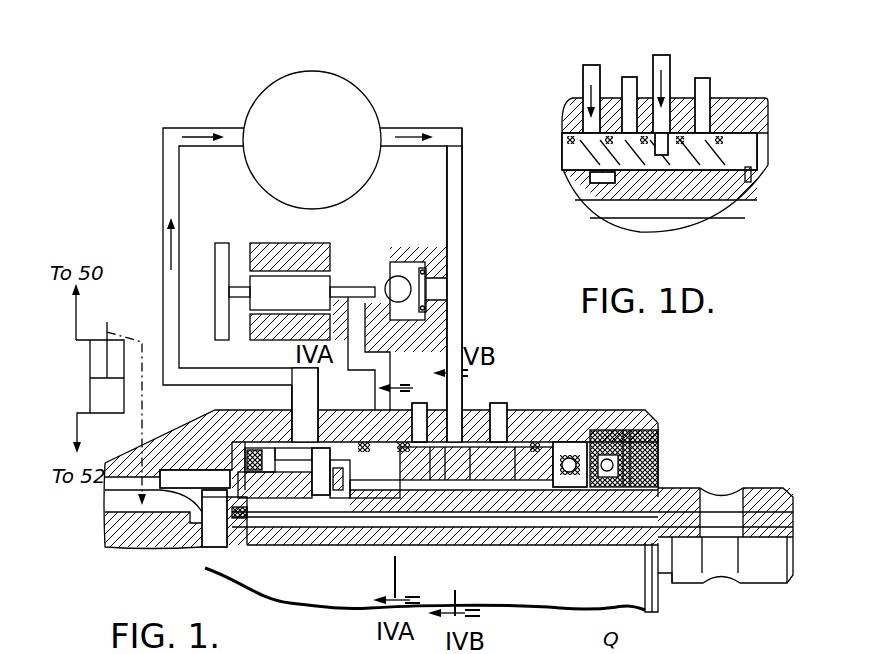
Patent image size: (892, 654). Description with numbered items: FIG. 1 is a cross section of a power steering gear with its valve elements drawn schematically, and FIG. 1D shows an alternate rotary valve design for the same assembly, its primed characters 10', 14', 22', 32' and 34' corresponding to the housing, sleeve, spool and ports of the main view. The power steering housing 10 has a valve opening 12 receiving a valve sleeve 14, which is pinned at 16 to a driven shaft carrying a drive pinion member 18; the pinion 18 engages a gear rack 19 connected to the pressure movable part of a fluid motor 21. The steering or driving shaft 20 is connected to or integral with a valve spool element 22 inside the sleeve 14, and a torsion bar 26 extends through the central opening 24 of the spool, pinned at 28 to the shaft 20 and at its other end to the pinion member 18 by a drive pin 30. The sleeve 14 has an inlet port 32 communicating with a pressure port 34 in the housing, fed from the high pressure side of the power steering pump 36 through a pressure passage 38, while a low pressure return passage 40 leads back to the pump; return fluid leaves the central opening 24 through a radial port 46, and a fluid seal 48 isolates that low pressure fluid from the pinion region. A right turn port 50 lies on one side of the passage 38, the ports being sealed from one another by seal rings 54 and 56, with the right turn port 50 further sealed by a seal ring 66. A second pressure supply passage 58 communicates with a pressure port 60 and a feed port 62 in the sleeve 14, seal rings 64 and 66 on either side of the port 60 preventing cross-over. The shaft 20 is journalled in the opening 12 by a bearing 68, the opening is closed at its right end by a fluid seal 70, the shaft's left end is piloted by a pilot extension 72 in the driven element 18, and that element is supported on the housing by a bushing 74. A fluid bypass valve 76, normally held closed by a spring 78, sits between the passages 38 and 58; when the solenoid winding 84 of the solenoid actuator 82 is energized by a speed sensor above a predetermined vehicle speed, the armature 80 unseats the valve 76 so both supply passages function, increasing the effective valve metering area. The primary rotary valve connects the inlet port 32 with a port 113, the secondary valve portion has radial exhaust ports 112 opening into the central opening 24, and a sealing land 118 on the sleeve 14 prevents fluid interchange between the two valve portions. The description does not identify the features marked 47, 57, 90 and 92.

In FIG. 1, the power steering housing 10 is at (381, 312).
In FIG. 1, the valve opening 12 is at (612, 430).
In FIG. 1, the valve sleeve 14 is at (583, 477).
In FIG. 1, the pin 16 is at (292, 458).
In FIG. 1, the drive pinion member 18 is at (142, 540).
In FIG. 1, the gear rack 19 is at (108, 320).
In FIG. 1, the steering or driving shaft 20 is at (692, 490).
In FIG. 1, the fluid motor 21 is at (124, 415).
In FIG. 1, the valve spool element 22 is at (572, 570).
In FIG. 1, the central opening 24 is at (612, 530).
In FIG. 1, the torsion bar 26 is at (645, 570).
In FIG. 1, the pin 28 is at (765, 497).
In FIG. 1, the drive pin 30 is at (205, 568).
In FIG. 1, the inlet port 32 is at (504, 501).
In FIG. 1, the pressure port 34 is at (465, 402).
In FIG. 1, the power steering pump 36 is at (329, 83).
In FIG. 1, the pressure passage 38 is at (463, 171).
In FIG. 1, the low pressure return passage 40 is at (163, 162).
In FIG. 1, the radial port 46 is at (287, 540).
In FIG. 1, the fluid port 47 is at (316, 405).
In FIG. 1, the fluid seal 48 is at (237, 440).
In FIG. 1, the right turn port 50 is at (518, 440).
In FIG. 1, the seal ring 54 is at (462, 520).
In FIG. 1, the seal ring 56 is at (505, 428).
In FIG. 1, the orifice 57 is at (420, 392).
In FIG. 1, the second pressure supply passage 58 is at (395, 358).
In FIG. 1, the pressure port 60 is at (305, 418).
In FIG. 1, the feed port 62 is at (405, 500).
In FIG. 1, the seal ring 64 is at (398, 455).
In FIG. 1, the seal ring 66 is at (545, 445).
In FIG. 1, the bearing 68 is at (638, 430).
In FIG. 1, the fluid seal 70 is at (657, 445).
In FIG. 1, the pilot extension 72 is at (216, 548).
In FIG. 1, the bushing 74 is at (170, 478).
In FIG. 1, the fluid bypass valve 76 is at (400, 262).
In FIG. 1, the spring 78 is at (427, 272).
In FIG. 1, the armature 80 is at (340, 272).
In FIG. 1, the solenoid actuator 82 is at (333, 247).
In FIG. 1, the solenoid winding 84 is at (255, 255).
In FIG. 1, the wire 90 is at (425, 609).
In FIG. 1, the wire 92 is at (712, 638).
In FIG. 1, the exhaust ports 112 is at (362, 530).
In FIG. 1, the port 113 is at (540, 520).
In FIG. 1, the sealing land 118 is at (438, 520).
In FIG. 1D, the valve housing 10' is at (646, 148).
In FIG. 1D, the bearing 14' is at (637, 151).
In FIG. 1D, the rack 22' is at (630, 235).
In FIG. 1D, the valve sleeve 32' is at (691, 215).
In FIG. 1D, the drive pin 34' is at (653, 66).